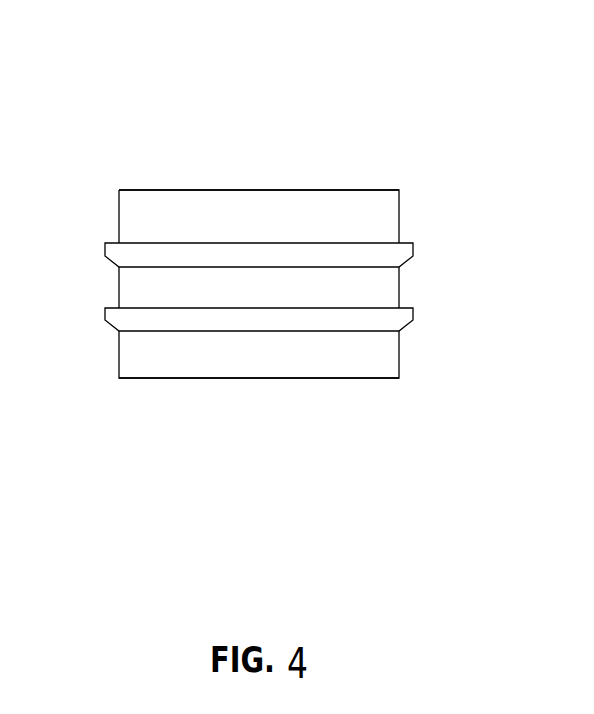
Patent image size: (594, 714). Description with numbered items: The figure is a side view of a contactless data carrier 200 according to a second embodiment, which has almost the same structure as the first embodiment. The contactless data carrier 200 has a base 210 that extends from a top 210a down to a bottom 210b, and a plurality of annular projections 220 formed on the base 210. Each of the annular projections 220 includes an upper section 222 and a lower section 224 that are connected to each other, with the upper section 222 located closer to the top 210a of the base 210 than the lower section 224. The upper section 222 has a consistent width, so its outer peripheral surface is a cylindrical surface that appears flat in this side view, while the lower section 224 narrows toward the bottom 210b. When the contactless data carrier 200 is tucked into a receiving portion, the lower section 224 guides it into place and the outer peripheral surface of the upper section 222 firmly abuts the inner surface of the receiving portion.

The contactless data carrier 200 is at (306, 257).
The base 210 is at (283, 208).
The top of the base 210a is at (243, 189).
The bottom surface of body 210b is at (222, 379).
The annular projections 220 is at (342, 264).
The upper section 222 is at (404, 252).
The lower section 224 is at (402, 259).